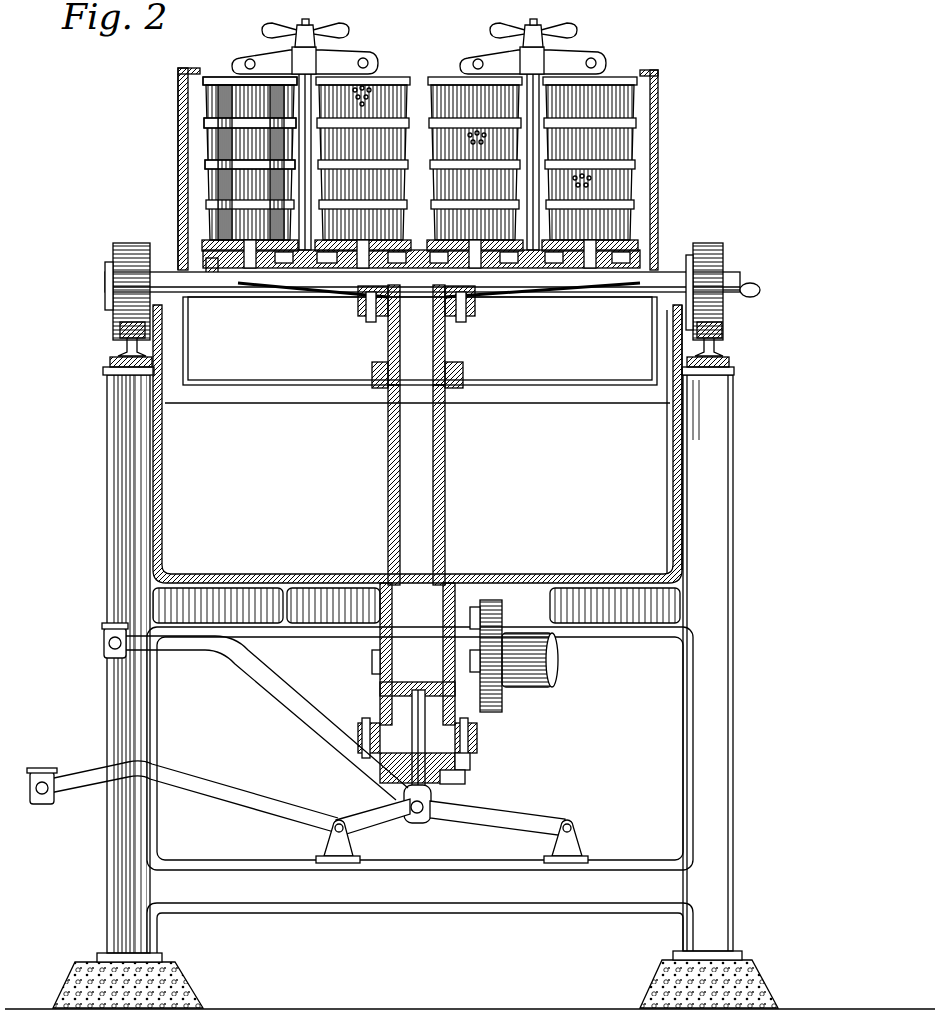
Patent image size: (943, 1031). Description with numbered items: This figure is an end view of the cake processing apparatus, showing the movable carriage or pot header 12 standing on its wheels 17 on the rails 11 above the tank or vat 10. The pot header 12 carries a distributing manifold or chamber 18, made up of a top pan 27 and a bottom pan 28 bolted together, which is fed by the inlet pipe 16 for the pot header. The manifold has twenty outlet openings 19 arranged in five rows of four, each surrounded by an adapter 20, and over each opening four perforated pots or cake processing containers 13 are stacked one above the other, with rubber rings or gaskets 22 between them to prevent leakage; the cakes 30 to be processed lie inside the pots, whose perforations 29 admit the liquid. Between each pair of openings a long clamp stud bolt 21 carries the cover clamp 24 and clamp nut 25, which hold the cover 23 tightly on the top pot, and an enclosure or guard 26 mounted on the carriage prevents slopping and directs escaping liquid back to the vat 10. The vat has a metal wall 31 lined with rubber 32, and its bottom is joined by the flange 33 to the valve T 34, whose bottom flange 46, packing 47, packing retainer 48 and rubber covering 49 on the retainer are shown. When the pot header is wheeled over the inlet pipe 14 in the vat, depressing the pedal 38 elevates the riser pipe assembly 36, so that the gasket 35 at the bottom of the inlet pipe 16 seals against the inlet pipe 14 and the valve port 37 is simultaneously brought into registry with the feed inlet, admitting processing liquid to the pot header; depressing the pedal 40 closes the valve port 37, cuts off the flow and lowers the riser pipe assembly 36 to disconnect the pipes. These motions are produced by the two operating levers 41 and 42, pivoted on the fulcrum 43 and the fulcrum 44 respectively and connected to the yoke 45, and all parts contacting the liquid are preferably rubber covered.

The vat 10 is at (417, 444).
The rails 11 is at (124, 346).
The pot header 12 is at (677, 268).
The pots 13 is at (345, 140).
The inlet pipe in the vat 14 is at (427, 428).
The inlet pipe for the pot header 16 is at (388, 336).
The wheels 17 is at (113, 270).
The distributing manifold 18 is at (422, 281).
The outlet openings 19 is at (352, 230).
The adapter 20 is at (210, 250).
The clamp stud bolt 21 is at (311, 192).
The rubber rings 22 is at (207, 82).
The cover 23 is at (215, 77).
The cover clamp 24 is at (276, 54).
The clamp nut 25 is at (280, 26).
The guard 26 is at (178, 100).
The top pan 27 is at (206, 262).
The bottom pan 28 is at (292, 300).
The perforations 29 is at (372, 88).
The cakes 30 is at (218, 172).
The metal wall 31 is at (682, 470).
The rubber lining 32 is at (664, 490).
The flange 33 is at (482, 600).
The valve T 34 is at (425, 608).
The gasket 35 is at (463, 372).
The riser pipe assembly 36 is at (372, 657).
The valve port 37 is at (484, 660).
The pedal 38 is at (62, 778).
The pedal 40 is at (104, 642).
The operating lever 41 is at (515, 806).
The operating lever 42 is at (360, 826).
The fulcrum 43 is at (582, 842).
The fulcrum 44 is at (324, 846).
The yoke 45 is at (431, 800).
The valve T bottom flange 46 is at (477, 738).
The packing 47 is at (470, 762).
The packing retainer 48 is at (465, 777).
The rubber covering 49 is at (405, 795).